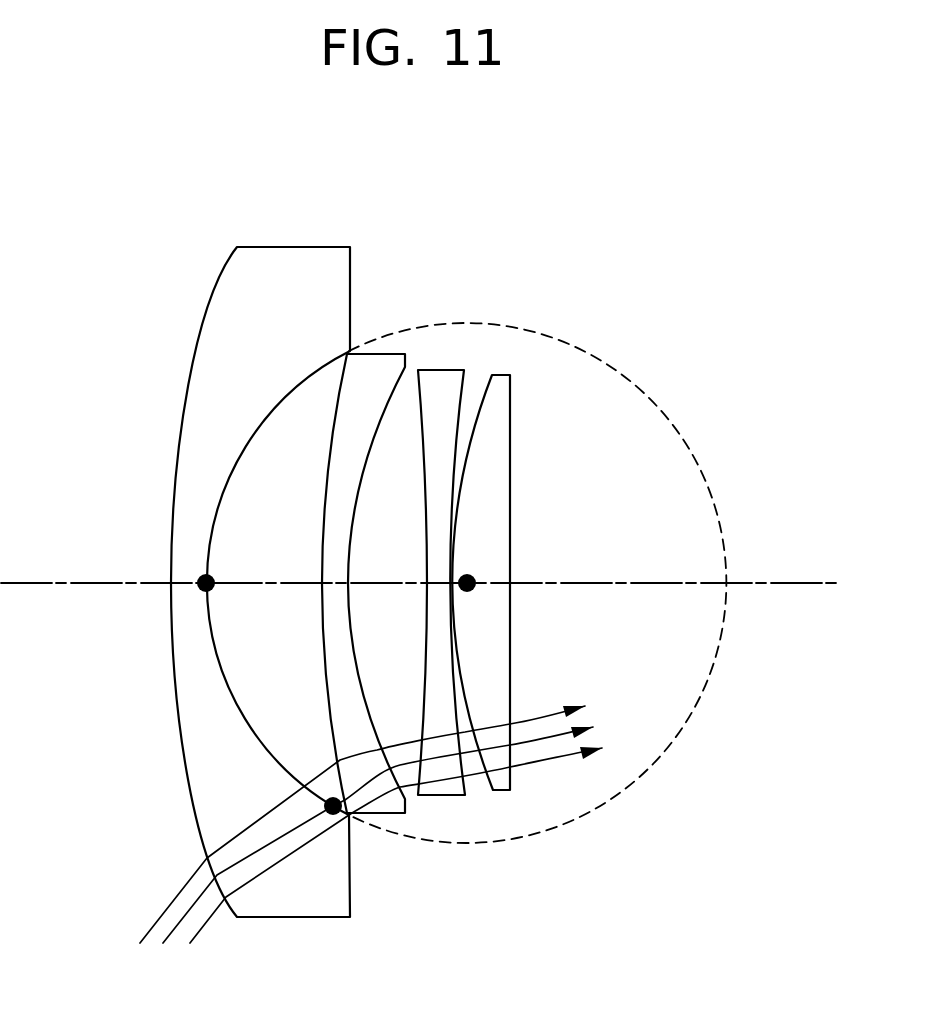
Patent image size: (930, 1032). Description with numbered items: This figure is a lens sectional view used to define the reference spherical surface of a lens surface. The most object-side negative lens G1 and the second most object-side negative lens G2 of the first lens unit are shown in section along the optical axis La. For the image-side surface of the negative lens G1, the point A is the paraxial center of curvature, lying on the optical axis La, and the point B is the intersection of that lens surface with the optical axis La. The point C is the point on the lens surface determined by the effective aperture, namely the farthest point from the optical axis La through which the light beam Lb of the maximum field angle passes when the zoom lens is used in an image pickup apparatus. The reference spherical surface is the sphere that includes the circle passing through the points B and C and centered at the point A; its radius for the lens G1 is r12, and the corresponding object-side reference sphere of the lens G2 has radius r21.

The most object-side negative lens G1 is at (295, 272).
The second most object-side negative lens G2 is at (380, 367).
The center of curvature A is at (467, 583).
The point of intersection of the lens surface and the optical axis B is at (206, 583).
The point on the lens surface determined by the effective aperture C is at (335, 814).
The optical axis La is at (790, 582).
The light beam of the maximum field angle Lb is at (197, 948).